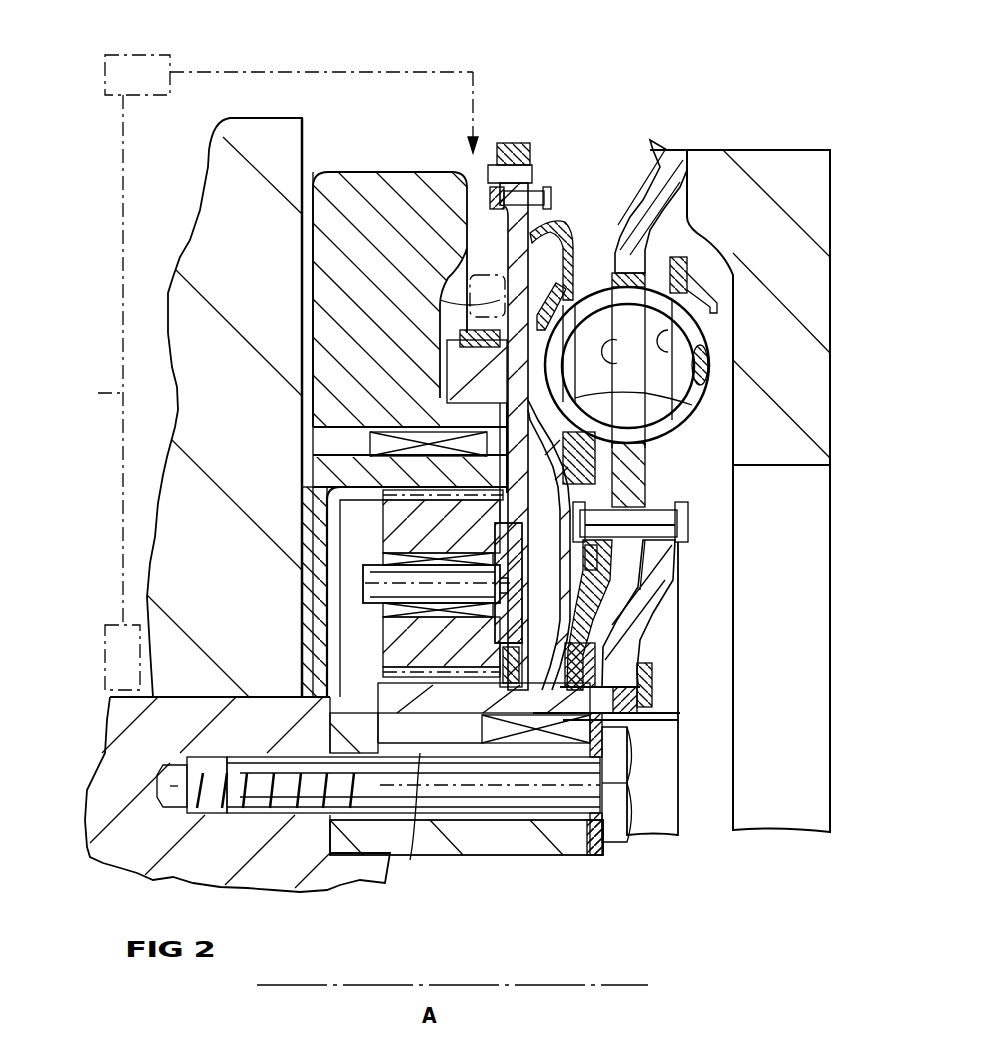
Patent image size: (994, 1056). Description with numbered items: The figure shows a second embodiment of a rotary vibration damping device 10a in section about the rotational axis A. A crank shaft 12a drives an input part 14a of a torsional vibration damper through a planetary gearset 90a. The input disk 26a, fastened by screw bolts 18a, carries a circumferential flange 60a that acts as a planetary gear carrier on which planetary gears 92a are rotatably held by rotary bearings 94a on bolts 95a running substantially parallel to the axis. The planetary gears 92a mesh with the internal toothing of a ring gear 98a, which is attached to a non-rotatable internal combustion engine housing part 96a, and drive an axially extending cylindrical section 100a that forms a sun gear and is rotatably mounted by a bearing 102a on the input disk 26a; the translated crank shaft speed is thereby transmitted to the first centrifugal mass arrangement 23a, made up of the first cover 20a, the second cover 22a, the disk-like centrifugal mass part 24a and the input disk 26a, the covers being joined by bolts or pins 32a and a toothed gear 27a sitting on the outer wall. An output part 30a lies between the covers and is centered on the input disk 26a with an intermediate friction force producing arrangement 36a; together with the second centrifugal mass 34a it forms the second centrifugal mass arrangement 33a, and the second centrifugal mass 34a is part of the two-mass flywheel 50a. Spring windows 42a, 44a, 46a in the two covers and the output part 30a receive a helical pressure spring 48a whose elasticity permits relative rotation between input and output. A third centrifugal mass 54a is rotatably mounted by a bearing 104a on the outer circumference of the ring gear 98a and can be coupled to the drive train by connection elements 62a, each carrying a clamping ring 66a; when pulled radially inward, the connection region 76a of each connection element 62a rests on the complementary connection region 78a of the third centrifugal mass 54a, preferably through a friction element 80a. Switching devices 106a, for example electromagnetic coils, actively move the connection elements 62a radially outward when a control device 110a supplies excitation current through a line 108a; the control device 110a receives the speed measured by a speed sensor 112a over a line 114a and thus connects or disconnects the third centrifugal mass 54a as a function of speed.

The rotary vibration damping device 10a is at (580, 110).
The crank shaft 12a is at (110, 759).
The input part 14a is at (575, 253).
The screw bolts 18a is at (616, 842).
The first cover 20a is at (675, 835).
The second cover 22a is at (562, 240).
The first centrifugal mass arrangement 23a is at (536, 185).
The centrifugal mass part 24a is at (553, 217).
The input disk 26a is at (548, 857).
The toothed gear 27a is at (512, 143).
The output part 30a is at (658, 178).
The bolts or pins 32a is at (693, 540).
The second centrifugal mass arrangement 33a is at (787, 150).
The second centrifugal mass 34a is at (830, 328).
The friction force producing arrangement 36a is at (645, 713).
The spring window 42a is at (668, 328).
The spring window 44a is at (645, 372).
The spring window 46a is at (706, 382).
The helical pressure spring 48a is at (693, 410).
The two-mass flywheel 50a is at (686, 114).
The third centrifugal mass 54a is at (438, 357).
The circumferential flange 60a is at (193, 717).
The connection elements 62a is at (450, 373).
The clamping ring 66a is at (457, 340).
The connection region 76a is at (462, 408).
The connection region 78a is at (507, 405).
The friction element 80a is at (440, 403).
The planetary gearset 90a is at (478, 880).
The planetary gears 92a is at (383, 505).
The rotary bearings 94a is at (363, 583).
The bolts 95a is at (383, 600).
The internal combustion engine housing part 96a is at (305, 135).
The ring gear 98a is at (300, 497).
The cylindrical section 100a is at (410, 860).
The bearing 102a is at (632, 720).
The bearing 104a is at (380, 462).
The switching devices 106a is at (430, 198).
The line 108a is at (360, 72).
The control device 110a is at (180, 110).
The speed sensor 112a is at (105, 660).
The line 114a is at (86, 360).